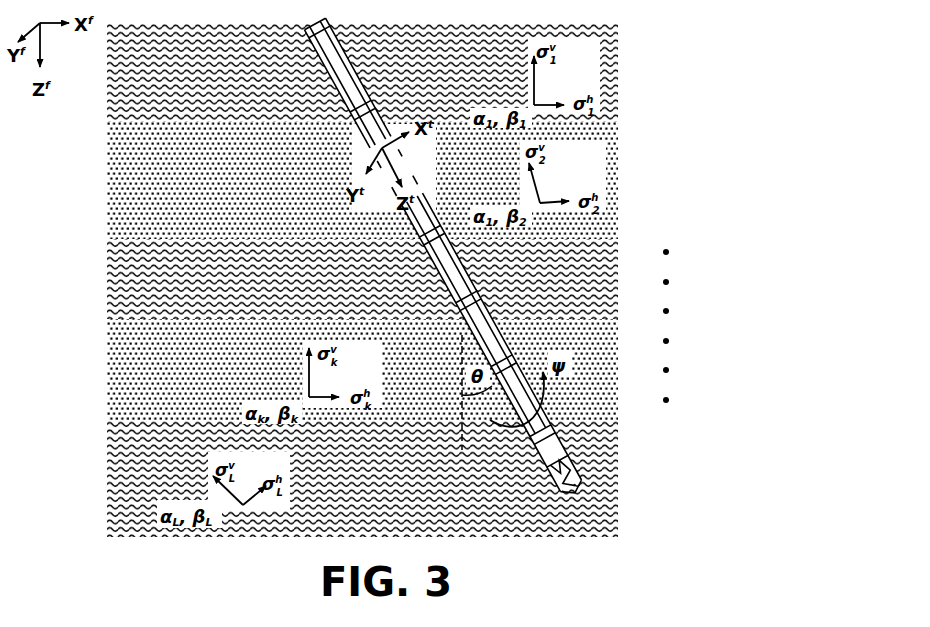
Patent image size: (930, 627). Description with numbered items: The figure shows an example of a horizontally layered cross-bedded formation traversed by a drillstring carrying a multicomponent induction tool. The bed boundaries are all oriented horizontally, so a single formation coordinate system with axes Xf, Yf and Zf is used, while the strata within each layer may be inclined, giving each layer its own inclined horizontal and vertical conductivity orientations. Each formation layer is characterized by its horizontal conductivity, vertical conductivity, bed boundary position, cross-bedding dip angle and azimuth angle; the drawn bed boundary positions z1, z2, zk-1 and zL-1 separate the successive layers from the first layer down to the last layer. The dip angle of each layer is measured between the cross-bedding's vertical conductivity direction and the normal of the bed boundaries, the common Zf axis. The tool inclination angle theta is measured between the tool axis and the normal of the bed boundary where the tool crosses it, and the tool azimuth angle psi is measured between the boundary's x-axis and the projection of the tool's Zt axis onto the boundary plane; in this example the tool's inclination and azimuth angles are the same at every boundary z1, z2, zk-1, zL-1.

The bed boundary position z1 is at (620, 123).
The bed boundary position z2 is at (620, 239).
The bed boundary position zk-1 is at (620, 319).
The bed boundary position zL-1 is at (620, 421).